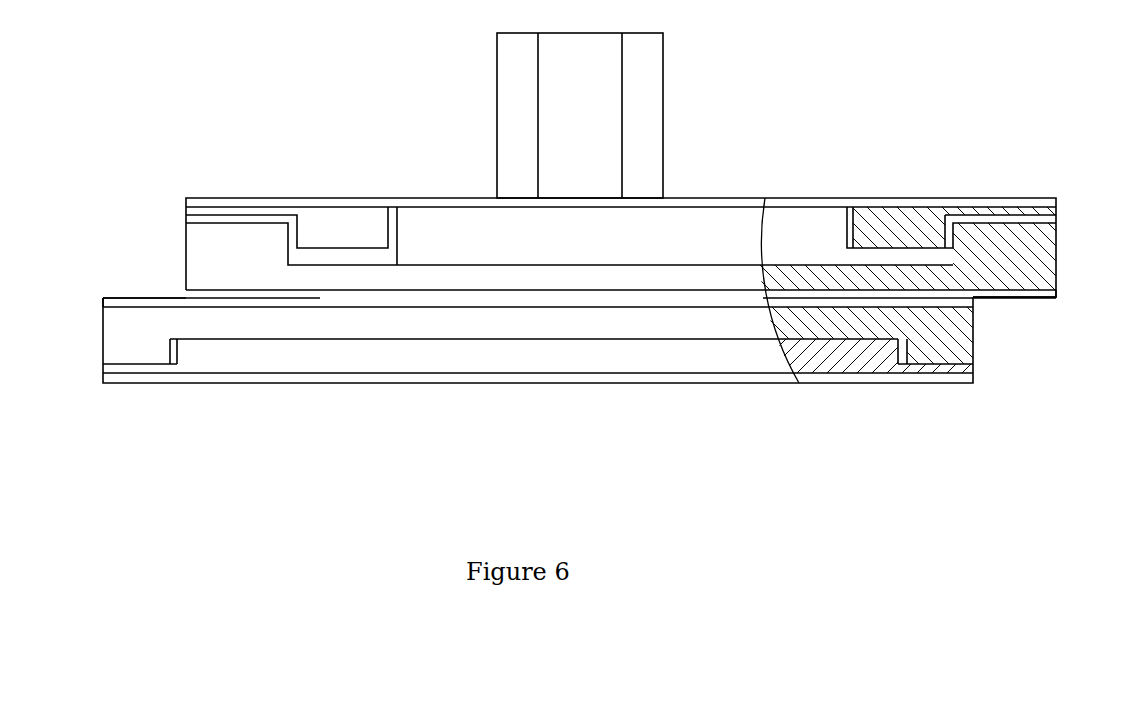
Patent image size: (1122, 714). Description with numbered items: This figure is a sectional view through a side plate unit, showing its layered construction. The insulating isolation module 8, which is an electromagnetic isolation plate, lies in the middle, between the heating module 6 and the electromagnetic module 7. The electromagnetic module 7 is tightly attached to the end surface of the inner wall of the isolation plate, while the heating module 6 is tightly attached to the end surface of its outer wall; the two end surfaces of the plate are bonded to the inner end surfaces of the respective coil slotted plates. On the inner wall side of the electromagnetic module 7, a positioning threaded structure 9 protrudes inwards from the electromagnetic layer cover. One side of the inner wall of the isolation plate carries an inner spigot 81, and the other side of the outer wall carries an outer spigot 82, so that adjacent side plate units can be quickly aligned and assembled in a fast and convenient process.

The heating module 6 is at (702, 355).
The electromagnetic module 7 is at (447, 233).
The insulating isolation module 8 is at (248, 298).
The inner spigot 81 is at (147, 293).
The outer spigot 82 is at (1003, 299).
The positioning threaded structure 9 is at (507, 113).